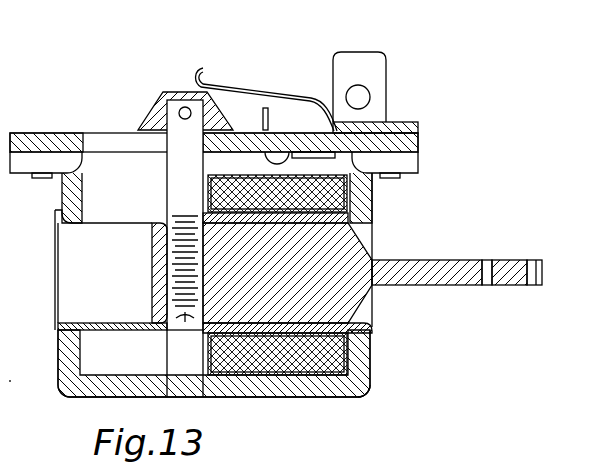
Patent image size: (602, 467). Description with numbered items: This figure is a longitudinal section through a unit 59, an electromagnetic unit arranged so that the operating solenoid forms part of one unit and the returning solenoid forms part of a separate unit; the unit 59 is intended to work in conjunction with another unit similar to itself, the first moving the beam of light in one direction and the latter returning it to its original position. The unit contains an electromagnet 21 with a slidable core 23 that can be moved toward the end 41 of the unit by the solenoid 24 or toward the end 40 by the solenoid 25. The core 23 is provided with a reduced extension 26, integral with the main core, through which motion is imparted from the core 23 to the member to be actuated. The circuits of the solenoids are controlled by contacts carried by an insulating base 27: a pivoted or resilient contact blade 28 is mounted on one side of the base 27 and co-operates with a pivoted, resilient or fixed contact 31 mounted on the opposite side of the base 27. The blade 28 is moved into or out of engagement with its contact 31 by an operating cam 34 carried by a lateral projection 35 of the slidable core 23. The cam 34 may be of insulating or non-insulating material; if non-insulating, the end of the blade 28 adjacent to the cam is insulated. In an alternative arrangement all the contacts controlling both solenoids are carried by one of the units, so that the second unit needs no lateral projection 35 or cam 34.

The electromagnet 21 is at (272, 396).
The slidable core 23 is at (153, 283).
The solenoid 24 is at (212, 350).
The solenoid 25 is at (6, 388).
The reduced extension 26 is at (421, 285).
The insulating base 27 is at (420, 142).
The contact blade 28 is at (276, 97).
The contact 31 is at (281, 118).
The operating cam 34 is at (165, 95).
The lateral projection 35 is at (185, 215).
The end of the unit 40 is at (57, 312).
The end of the unit 41 is at (373, 324).
The unit 59 is at (377, 386).